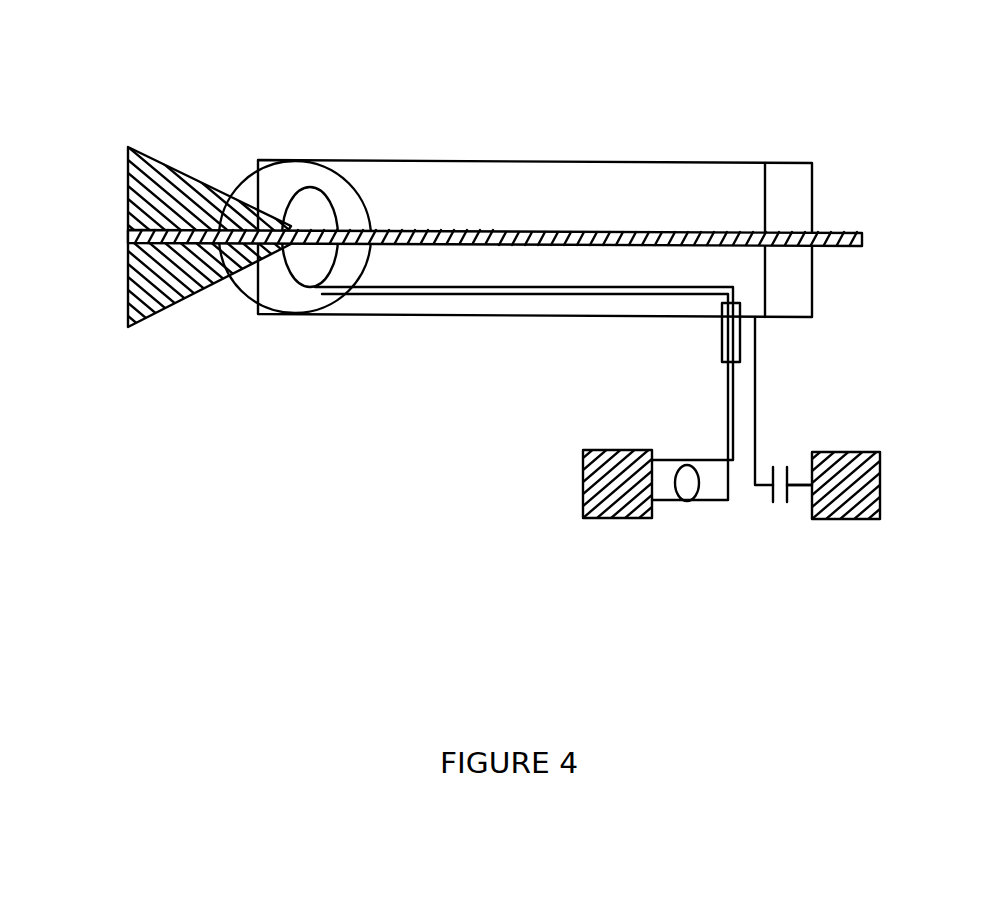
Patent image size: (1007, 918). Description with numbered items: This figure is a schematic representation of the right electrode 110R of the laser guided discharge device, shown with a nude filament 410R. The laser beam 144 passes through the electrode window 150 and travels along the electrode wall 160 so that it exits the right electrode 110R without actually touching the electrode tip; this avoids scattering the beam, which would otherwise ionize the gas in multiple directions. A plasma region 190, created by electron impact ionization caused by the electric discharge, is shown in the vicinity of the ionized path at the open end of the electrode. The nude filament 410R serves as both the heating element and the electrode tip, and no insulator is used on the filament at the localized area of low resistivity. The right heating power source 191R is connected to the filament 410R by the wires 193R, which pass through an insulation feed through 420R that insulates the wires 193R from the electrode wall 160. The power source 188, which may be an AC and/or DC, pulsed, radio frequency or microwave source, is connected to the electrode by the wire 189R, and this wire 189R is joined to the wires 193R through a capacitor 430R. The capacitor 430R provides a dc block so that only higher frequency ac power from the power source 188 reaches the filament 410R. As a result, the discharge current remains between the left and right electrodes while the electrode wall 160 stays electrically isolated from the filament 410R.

The right electrode 110R is at (805, 102).
The plasma region 190 is at (192, 173).
The nude filament 410R is at (308, 188).
The electrode wall 160 is at (535, 160).
The electrode window 150 is at (793, 188).
The laser beam 144 is at (862, 240).
The insulation feed through 420R is at (722, 332).
The right wires 193R is at (688, 465).
The capacitor 430R is at (787, 452).
The right heating power source 191R is at (615, 520).
The right wire 189R is at (802, 488).
The power source 188 is at (847, 520).